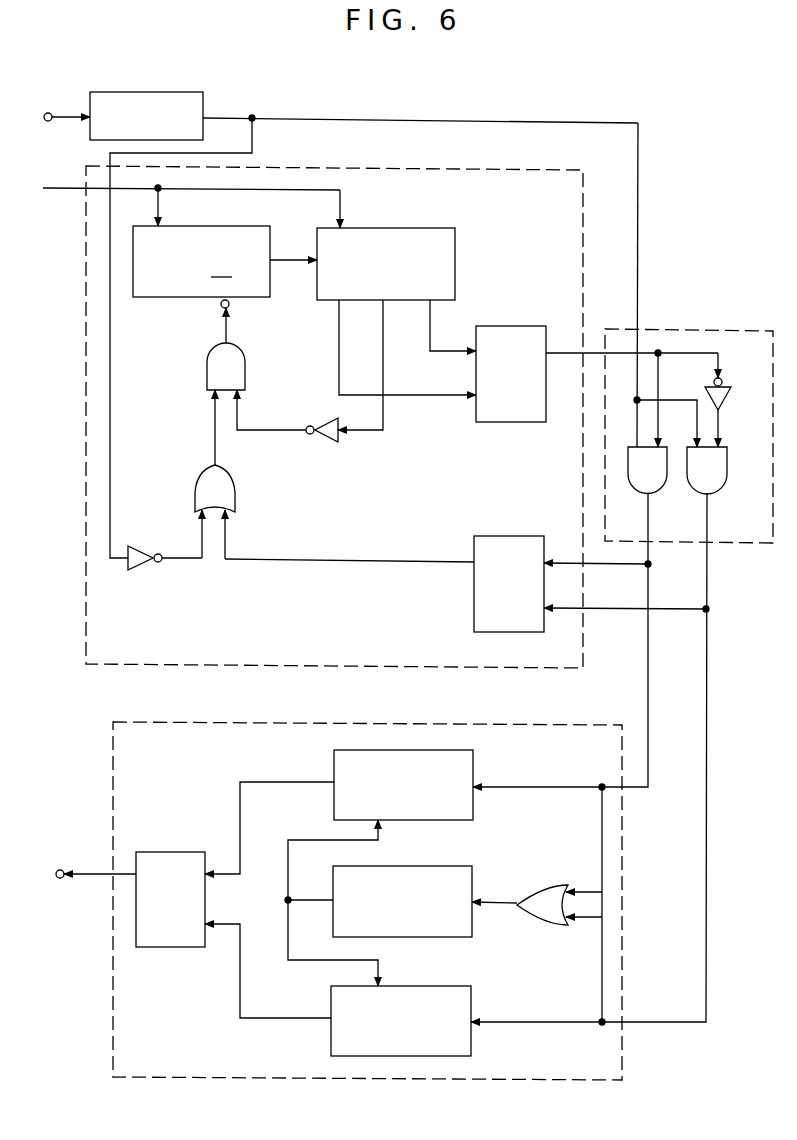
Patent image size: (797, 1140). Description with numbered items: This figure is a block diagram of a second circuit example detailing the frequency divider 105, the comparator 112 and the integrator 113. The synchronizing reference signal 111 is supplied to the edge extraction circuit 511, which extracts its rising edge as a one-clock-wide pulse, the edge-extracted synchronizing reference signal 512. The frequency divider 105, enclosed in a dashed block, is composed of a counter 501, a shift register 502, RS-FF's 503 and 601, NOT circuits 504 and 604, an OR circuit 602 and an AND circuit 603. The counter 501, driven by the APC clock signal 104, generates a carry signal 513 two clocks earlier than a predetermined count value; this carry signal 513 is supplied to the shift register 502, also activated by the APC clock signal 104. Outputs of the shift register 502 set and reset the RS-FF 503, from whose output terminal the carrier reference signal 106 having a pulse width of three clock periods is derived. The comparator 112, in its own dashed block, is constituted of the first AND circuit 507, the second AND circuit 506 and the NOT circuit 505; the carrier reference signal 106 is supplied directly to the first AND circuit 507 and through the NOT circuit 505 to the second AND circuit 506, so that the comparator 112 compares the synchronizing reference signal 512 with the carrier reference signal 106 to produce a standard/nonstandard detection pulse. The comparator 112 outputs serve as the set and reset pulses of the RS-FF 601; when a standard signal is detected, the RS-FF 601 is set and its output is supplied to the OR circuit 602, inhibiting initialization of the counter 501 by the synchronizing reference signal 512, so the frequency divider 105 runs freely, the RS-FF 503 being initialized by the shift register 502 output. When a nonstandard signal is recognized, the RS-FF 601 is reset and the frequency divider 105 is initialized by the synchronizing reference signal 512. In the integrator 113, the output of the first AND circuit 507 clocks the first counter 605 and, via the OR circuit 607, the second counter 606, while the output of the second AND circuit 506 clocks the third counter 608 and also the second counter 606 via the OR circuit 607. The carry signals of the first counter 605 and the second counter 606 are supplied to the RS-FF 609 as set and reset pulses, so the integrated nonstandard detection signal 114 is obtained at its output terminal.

The edge extraction circuit 511 is at (147, 92).
The synchronizing reference signal 111 is at (58, 124).
The edge-extracted synchronizing reference signal 512 is at (316, 116).
The APC clock signal 104 is at (57, 192).
The frequency divider 105 is at (86, 645).
The counter 501 is at (150, 299).
The carry signal 513 is at (283, 266).
The shift register 502 is at (456, 273).
The RS-FF 503 is at (510, 424).
The AND circuit 603 is at (207, 378).
The OR circuit 602 is at (195, 488).
The NOT circuit 604 is at (325, 444).
The NOT circuit 504 is at (140, 566).
The RS-FF 601 is at (474, 605).
The carrier reference signal 106 is at (614, 349).
The comparator 112 is at (704, 328).
The NOT circuit 505 is at (734, 404).
The first AND circuit 507 is at (660, 495).
The second AND circuit 506 is at (724, 495).
The integrator 113 is at (113, 748).
The first counter 605 is at (474, 755).
The second counter 606 is at (472, 876).
The OR circuit 607 is at (545, 927).
The third counter 608 is at (472, 997).
The RS-FF 609 is at (165, 949).
The nonstandard detection signal 114 is at (72, 880).